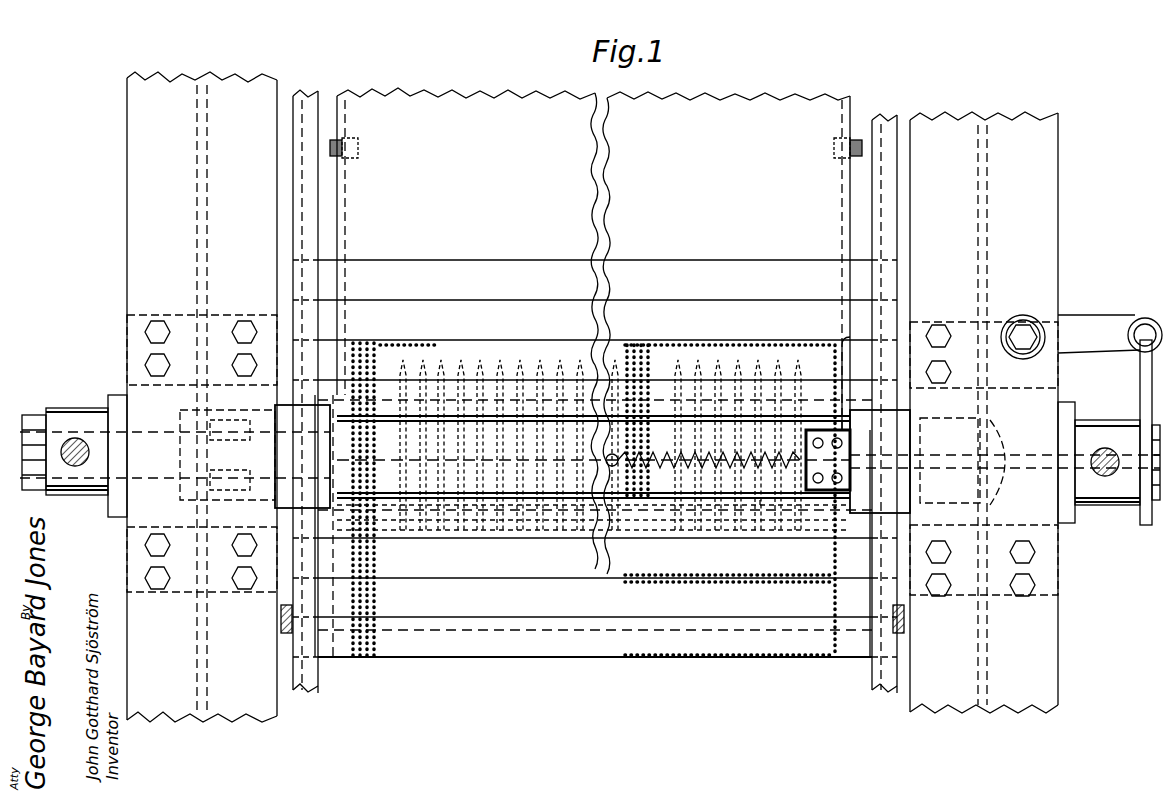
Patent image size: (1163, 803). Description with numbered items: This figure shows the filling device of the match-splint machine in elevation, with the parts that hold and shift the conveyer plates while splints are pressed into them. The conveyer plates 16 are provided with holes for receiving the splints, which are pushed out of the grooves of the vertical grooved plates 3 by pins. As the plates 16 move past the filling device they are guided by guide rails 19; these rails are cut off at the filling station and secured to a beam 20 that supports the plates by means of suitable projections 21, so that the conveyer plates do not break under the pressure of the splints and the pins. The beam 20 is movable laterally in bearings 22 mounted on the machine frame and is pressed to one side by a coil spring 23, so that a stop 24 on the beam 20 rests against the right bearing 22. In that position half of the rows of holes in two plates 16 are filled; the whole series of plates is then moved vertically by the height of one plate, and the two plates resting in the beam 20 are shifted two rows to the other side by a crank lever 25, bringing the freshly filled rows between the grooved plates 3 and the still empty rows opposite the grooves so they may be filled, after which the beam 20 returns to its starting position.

The grooved plates 3 is at (494, 360).
The conveyer plates 16 is at (544, 350).
The guide rails 19 is at (306, 672).
The beam 20 is at (442, 498).
The projections 21 is at (765, 503).
The bearings 22 is at (335, 390).
The coil spring 23 is at (725, 500).
The stop 24 is at (842, 350).
The crank lever 25 is at (1048, 368).